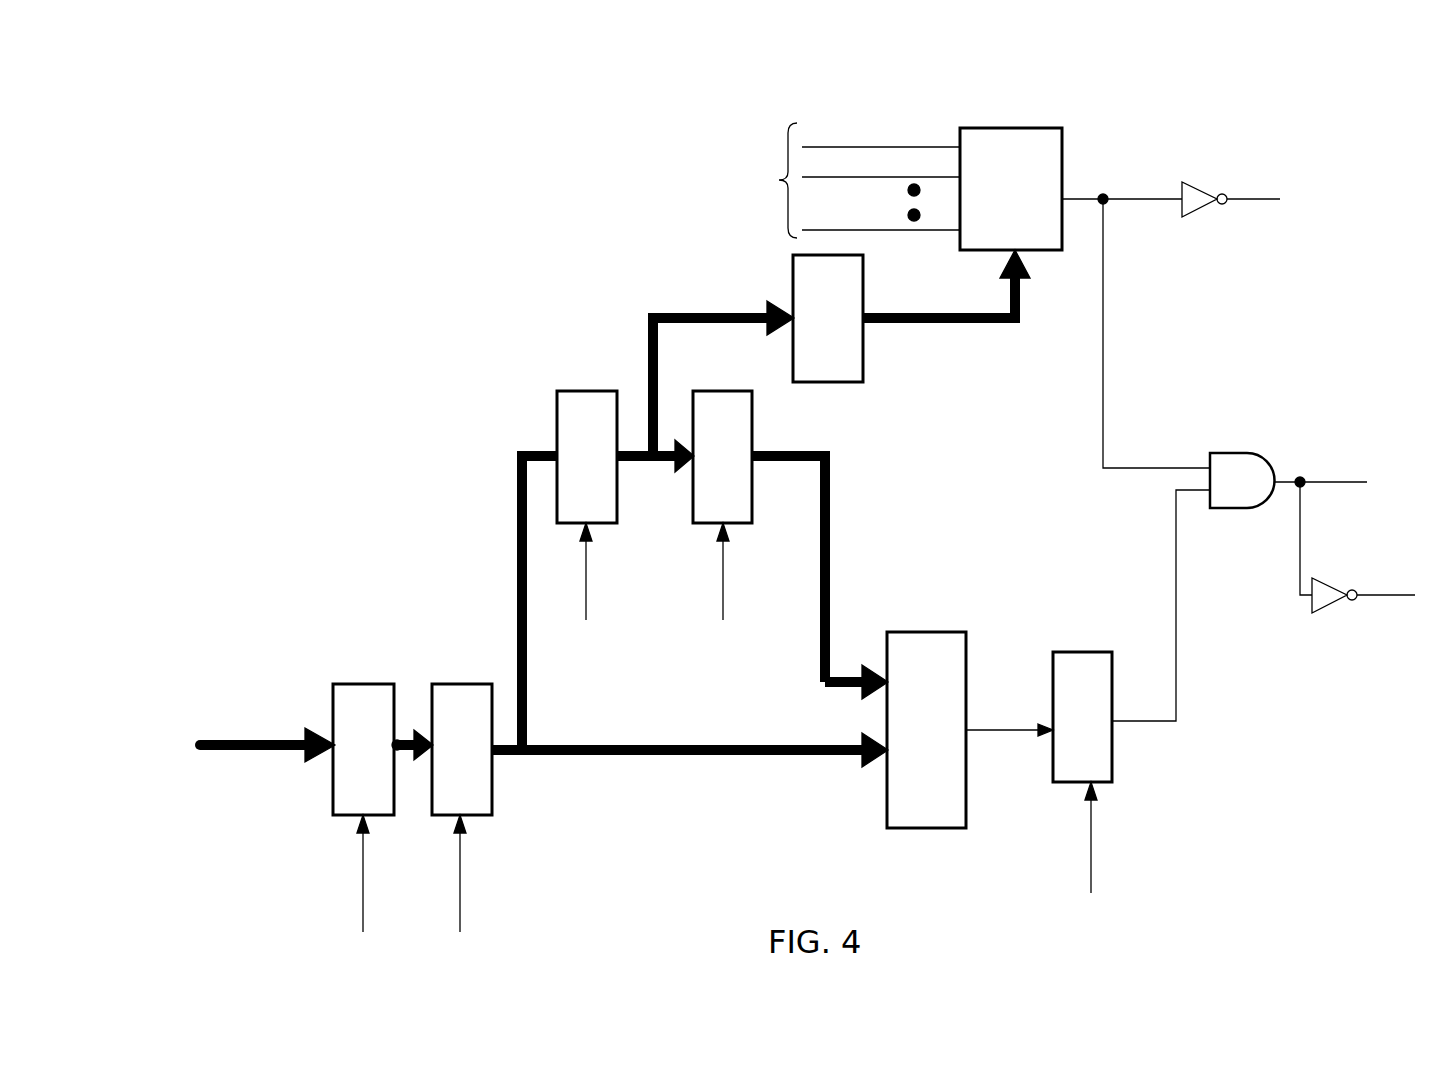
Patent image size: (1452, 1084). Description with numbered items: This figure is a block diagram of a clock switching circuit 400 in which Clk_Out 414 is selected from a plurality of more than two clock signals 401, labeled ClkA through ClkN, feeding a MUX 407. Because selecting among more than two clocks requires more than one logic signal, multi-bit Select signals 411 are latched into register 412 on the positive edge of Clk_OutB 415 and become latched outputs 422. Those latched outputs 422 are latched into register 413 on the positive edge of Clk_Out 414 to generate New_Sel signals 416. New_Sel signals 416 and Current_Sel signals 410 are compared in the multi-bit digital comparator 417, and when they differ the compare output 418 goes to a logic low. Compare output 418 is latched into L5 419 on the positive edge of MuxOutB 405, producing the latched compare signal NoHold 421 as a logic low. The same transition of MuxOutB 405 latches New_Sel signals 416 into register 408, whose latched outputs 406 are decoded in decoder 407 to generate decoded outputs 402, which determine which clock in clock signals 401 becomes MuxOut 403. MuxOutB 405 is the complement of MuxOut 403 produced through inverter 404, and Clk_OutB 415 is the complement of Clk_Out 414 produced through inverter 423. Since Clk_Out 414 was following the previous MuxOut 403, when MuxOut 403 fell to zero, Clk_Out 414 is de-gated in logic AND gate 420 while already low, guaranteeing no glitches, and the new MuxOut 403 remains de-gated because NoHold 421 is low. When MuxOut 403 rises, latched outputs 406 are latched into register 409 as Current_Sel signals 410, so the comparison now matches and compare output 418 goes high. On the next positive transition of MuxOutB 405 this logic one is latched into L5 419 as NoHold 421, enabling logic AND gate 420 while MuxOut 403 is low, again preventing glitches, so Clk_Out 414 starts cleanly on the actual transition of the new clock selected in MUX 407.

The clock switching circuit 400 is at (503, 240).
The clock signals 401 is at (779, 180).
The decoded outputs 402 is at (985, 328).
The MuxOut 403 is at (1120, 201).
The inverter 404 is at (1183, 180).
The MuxOutB 405 is at (1247, 199).
The latched outputs 406 is at (690, 312).
The decoder / MUX 407 is at (1005, 128).
The register Reg 408 is at (578, 390).
The register Reg 409 is at (722, 390).
The Current_Sel signals 410 is at (830, 500).
The select signals 411 is at (262, 752).
The register Reg 412 is at (355, 680).
The register Reg 413 is at (450, 680).
The Clk_Out 414 is at (1283, 478).
The Clk_OutB 415 is at (1376, 595).
The New_Sel signals 416 is at (675, 758).
The multi-bit digital comparator 417 is at (908, 630).
The compare output 418 is at (1013, 732).
The L5 419 is at (1082, 650).
The logic AND gate 420 is at (1225, 450).
The NoHold 421 is at (1152, 722).
The latched outputs 422 is at (398, 750).
The inverter 423 is at (1316, 580).